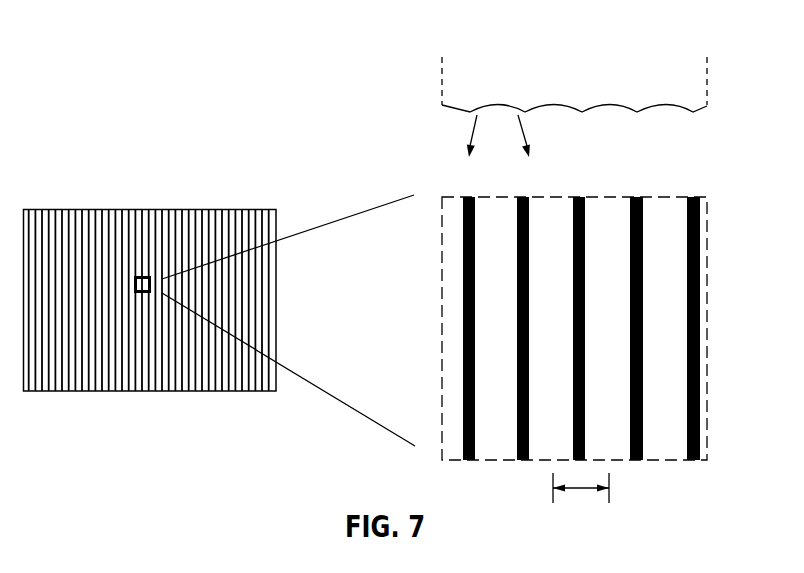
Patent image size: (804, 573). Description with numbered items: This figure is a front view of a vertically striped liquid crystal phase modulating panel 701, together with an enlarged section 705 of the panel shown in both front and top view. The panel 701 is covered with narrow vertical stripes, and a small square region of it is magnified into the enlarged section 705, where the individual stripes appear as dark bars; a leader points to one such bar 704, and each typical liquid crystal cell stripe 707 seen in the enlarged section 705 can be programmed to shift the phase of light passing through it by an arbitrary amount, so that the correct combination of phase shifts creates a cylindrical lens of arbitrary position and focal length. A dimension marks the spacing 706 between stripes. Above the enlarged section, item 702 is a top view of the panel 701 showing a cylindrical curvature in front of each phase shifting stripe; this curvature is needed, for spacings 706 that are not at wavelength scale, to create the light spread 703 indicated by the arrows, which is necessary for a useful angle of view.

The striped liquid crystal panel 701 is at (167, 208).
The top view of the panel 702 is at (610, 105).
The light spread 703 is at (523, 140).
The grating line 704 is at (636, 195).
The enlarged section 705 is at (424, 331).
The spacing 706 is at (582, 486).
The liquid crystal cell stripe 707 is at (665, 450).